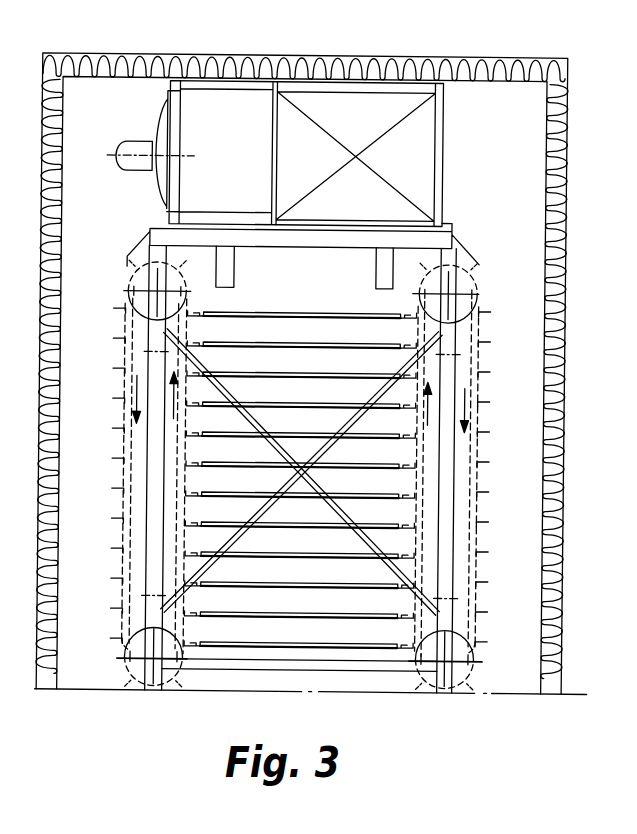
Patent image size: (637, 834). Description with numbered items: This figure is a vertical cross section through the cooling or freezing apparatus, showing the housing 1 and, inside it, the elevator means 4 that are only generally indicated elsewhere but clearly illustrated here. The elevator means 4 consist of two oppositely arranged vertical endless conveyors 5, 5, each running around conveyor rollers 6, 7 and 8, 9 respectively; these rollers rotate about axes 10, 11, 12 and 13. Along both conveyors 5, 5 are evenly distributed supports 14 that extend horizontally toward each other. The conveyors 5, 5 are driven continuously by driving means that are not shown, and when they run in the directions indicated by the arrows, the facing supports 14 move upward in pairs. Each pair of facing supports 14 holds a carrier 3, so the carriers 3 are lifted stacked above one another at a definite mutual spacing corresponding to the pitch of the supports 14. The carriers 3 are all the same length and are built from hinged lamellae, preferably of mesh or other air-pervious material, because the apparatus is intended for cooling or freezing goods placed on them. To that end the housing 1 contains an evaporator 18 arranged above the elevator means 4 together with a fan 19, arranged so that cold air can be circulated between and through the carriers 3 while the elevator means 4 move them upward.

The housing 1 is at (468, 66).
The carriers 3 is at (308, 318).
The elevator means 4 is at (479, 255).
The vertical endless conveyors 5 is at (123, 354).
The conveyor roller 6 is at (132, 291).
The conveyor roller 7 is at (130, 648).
The conveyor roller 8 is at (480, 300).
The conveyor roller 9 is at (465, 646).
The axis 10 is at (190, 299).
The axis 11 is at (133, 666).
The axis 12 is at (478, 290).
The axis 13 is at (468, 668).
The supports 14 is at (116, 428).
The evaporator 18 is at (356, 108).
The fan 19 is at (195, 102).